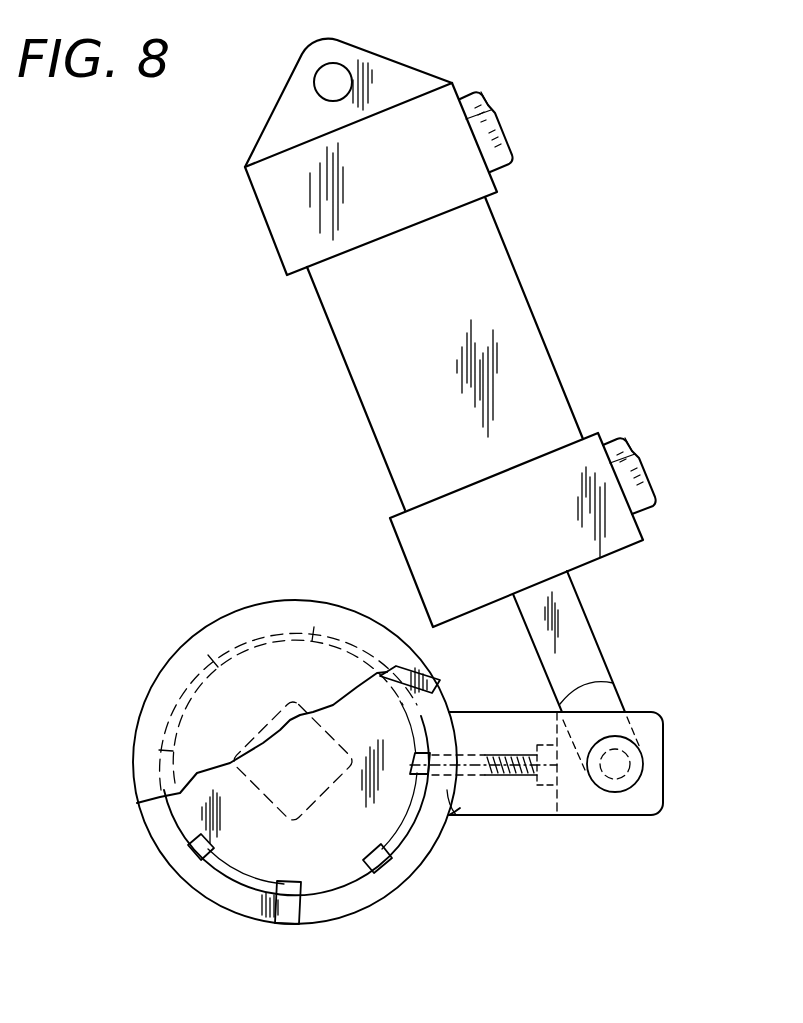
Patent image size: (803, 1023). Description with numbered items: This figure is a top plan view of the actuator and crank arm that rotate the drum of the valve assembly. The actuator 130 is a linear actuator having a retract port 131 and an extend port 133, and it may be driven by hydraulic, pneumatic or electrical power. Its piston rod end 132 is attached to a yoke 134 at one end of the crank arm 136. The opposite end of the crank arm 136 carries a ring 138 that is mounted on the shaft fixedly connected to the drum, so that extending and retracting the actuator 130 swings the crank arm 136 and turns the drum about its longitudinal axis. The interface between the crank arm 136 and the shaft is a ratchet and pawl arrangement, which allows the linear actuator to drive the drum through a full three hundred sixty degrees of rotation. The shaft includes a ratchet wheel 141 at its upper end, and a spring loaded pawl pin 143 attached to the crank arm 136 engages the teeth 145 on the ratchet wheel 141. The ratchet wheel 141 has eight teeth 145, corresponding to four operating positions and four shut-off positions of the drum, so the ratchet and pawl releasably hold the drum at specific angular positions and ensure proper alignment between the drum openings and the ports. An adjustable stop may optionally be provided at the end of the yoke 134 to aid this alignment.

The actuator 130 is at (487, 300).
The retract port 131 is at (645, 472).
The piston rod end 132 is at (593, 633).
The extend port 133 is at (507, 125).
The yoke 134 is at (577, 797).
The crank arm 136 is at (482, 800).
The ring 138 is at (183, 860).
The ratchet wheel 141 is at (377, 827).
The spring loaded pawl pin 143 is at (420, 762).
The teeth 145 is at (420, 753).